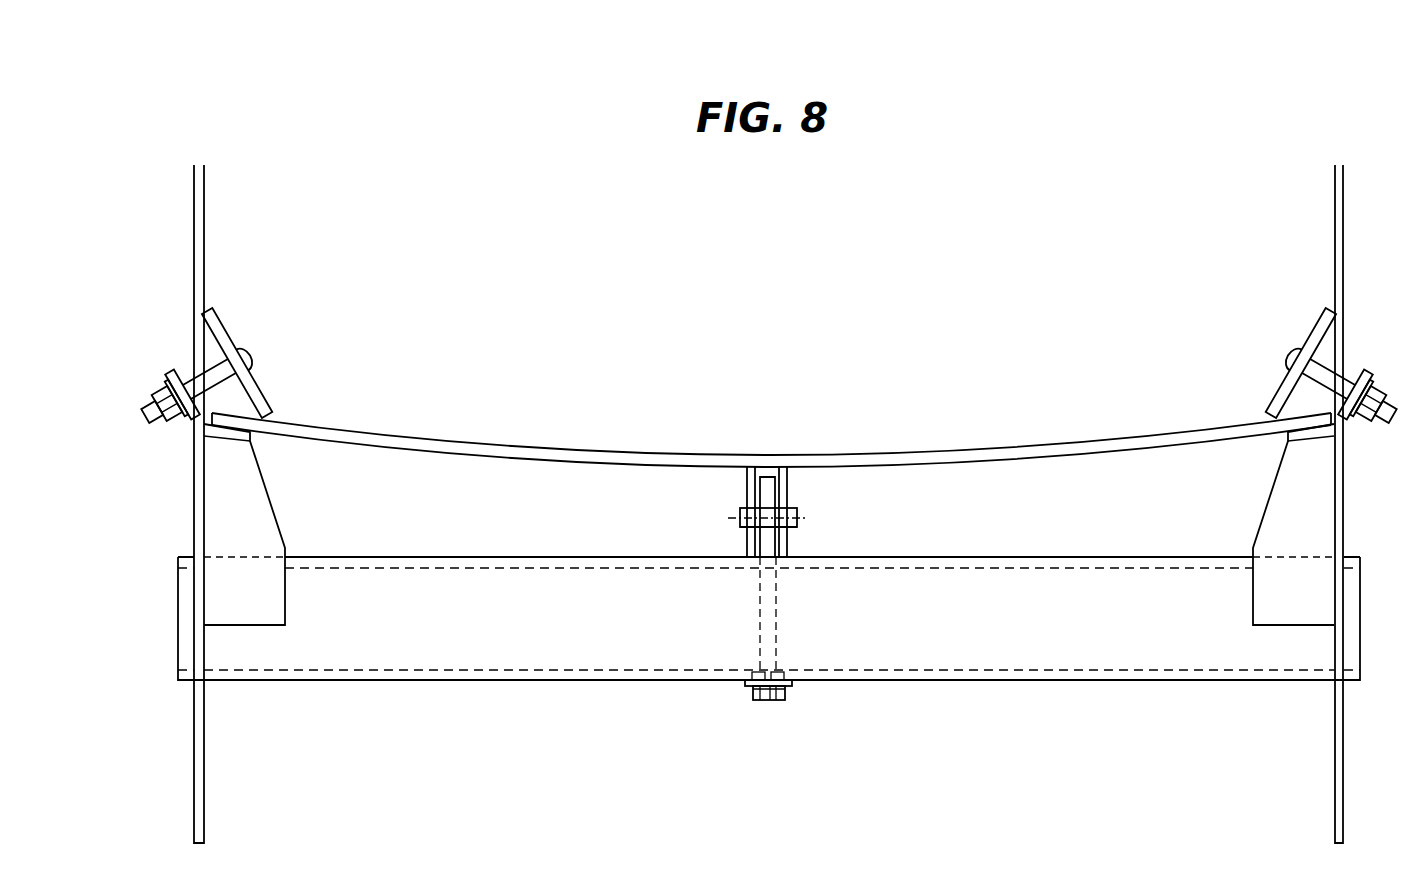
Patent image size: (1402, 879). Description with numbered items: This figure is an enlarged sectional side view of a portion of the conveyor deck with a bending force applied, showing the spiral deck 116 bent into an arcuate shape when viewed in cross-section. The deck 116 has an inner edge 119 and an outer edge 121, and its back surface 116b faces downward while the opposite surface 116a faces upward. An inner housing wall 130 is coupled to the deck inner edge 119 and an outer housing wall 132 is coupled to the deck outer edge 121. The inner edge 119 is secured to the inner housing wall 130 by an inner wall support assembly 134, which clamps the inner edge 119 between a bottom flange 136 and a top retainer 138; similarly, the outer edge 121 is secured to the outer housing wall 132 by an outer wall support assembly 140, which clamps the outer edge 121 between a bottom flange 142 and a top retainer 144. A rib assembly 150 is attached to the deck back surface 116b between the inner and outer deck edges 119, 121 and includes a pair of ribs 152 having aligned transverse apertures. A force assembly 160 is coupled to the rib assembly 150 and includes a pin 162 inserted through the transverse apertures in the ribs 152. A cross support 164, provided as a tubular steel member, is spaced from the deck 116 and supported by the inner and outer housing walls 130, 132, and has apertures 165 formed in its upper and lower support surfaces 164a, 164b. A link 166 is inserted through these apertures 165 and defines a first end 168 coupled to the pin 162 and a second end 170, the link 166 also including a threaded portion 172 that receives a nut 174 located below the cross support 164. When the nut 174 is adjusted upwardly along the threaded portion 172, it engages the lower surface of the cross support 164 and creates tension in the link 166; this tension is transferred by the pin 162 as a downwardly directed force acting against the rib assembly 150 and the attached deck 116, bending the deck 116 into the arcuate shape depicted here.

The spiral deck 116 is at (773, 422).
The deck front surface 116a is at (1037, 440).
The deck back surface 116b is at (1036, 468).
The inner edge 119 is at (200, 420).
The outer edge 121 is at (1338, 420).
The inner housing wall 130 is at (204, 250).
The outer housing wall 132 is at (1343, 227).
The inner wall support assembly 134 is at (158, 372).
The bottom flange 136 is at (228, 436).
The top retainer 138 is at (243, 350).
The outer wall support assembly 140 is at (1282, 318).
The bottom flange 142 is at (1310, 436).
The top retainer 144 is at (1318, 330).
The rib assembly 150 is at (746, 536).
The ribs 152 is at (750, 478).
The force assembly 160 is at (756, 701).
The pin 162 is at (790, 512).
The cross support 164 is at (769, 629).
The upper support surface 164a is at (512, 560).
The lower support surface 164b is at (538, 680).
The apertures 165 is at (780, 560).
The link 166 is at (772, 535).
The first end 168 is at (760, 530).
The second end 170 is at (775, 698).
The threaded portion 172 is at (757, 670).
The nut 174 is at (768, 700).